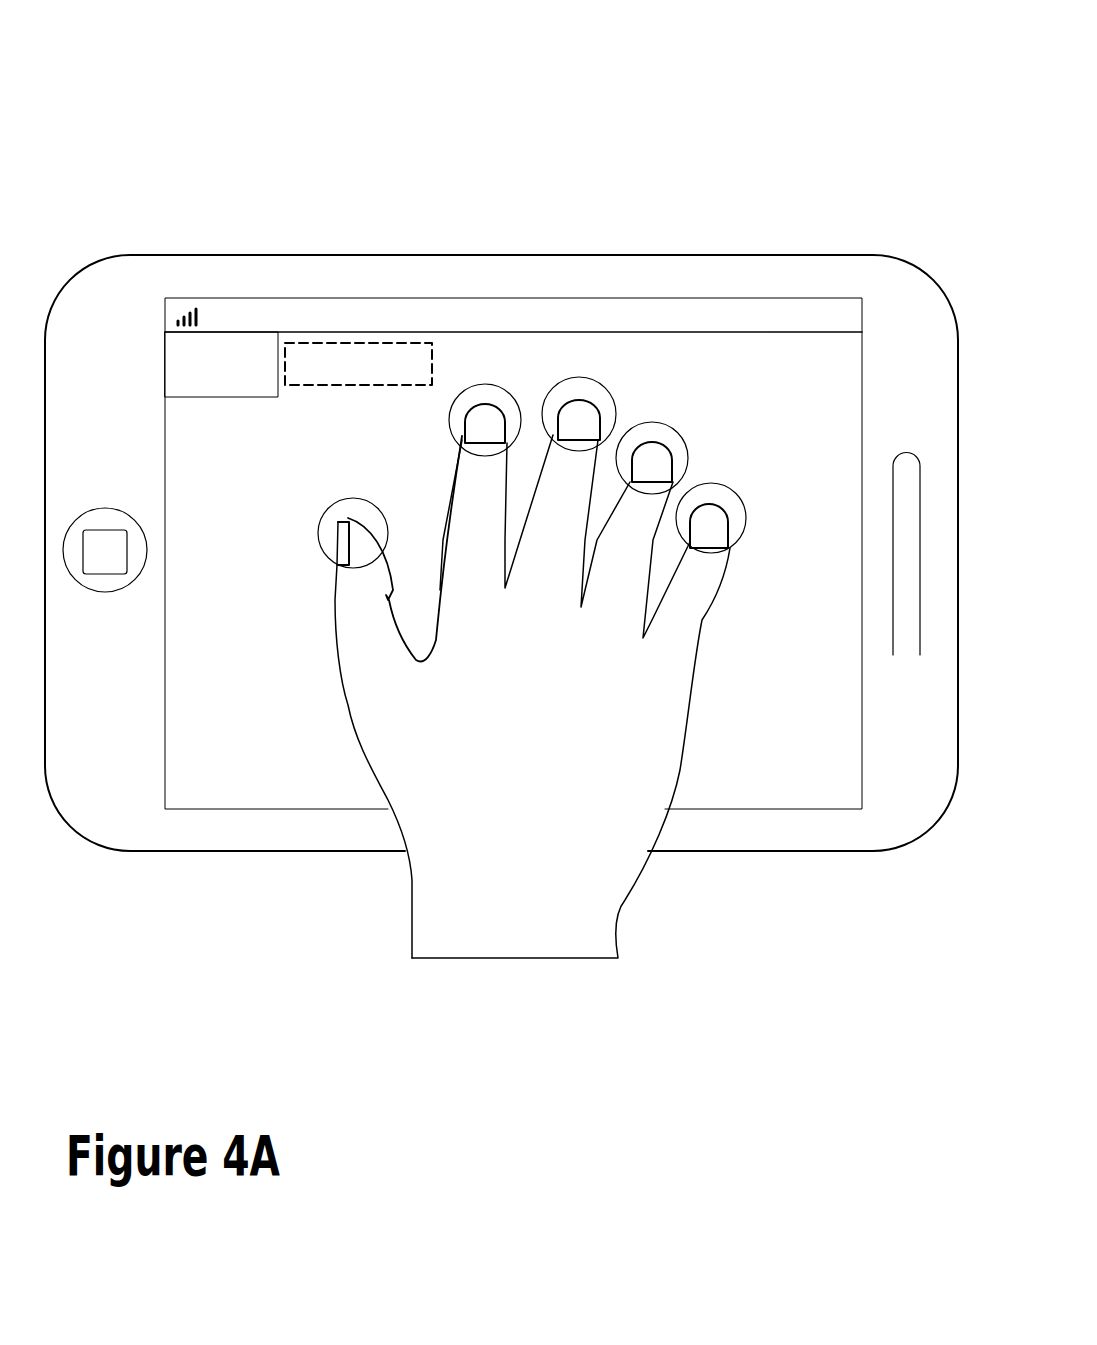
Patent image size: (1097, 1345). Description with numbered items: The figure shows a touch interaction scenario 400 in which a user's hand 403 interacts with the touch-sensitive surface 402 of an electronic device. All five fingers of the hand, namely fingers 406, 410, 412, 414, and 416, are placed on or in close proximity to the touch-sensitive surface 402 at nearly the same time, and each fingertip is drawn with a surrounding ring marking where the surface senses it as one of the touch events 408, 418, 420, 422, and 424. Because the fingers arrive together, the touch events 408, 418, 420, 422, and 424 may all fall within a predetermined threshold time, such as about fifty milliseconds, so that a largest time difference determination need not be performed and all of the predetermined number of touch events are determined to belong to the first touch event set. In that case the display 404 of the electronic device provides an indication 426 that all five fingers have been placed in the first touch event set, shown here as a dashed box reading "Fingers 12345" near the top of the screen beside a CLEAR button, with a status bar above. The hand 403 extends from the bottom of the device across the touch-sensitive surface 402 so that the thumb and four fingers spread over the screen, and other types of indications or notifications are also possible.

The touch interaction scenario 400 is at (573, 90).
The touch-sensitive surface 402 is at (822, 388).
The user's hand 403 is at (613, 912).
The display 404 is at (201, 297).
The finger 406 is at (338, 637).
The touch event 408 is at (348, 515).
The finger 410 is at (450, 478).
The finger 412 is at (540, 463).
The finger 414 is at (613, 492).
The finger 416 is at (702, 620).
The touch event 418 is at (476, 385).
The touch event 420 is at (593, 388).
The touch event 422 is at (660, 424).
The touch event 424 is at (740, 542).
The fingers count indicator 426 is at (348, 343).